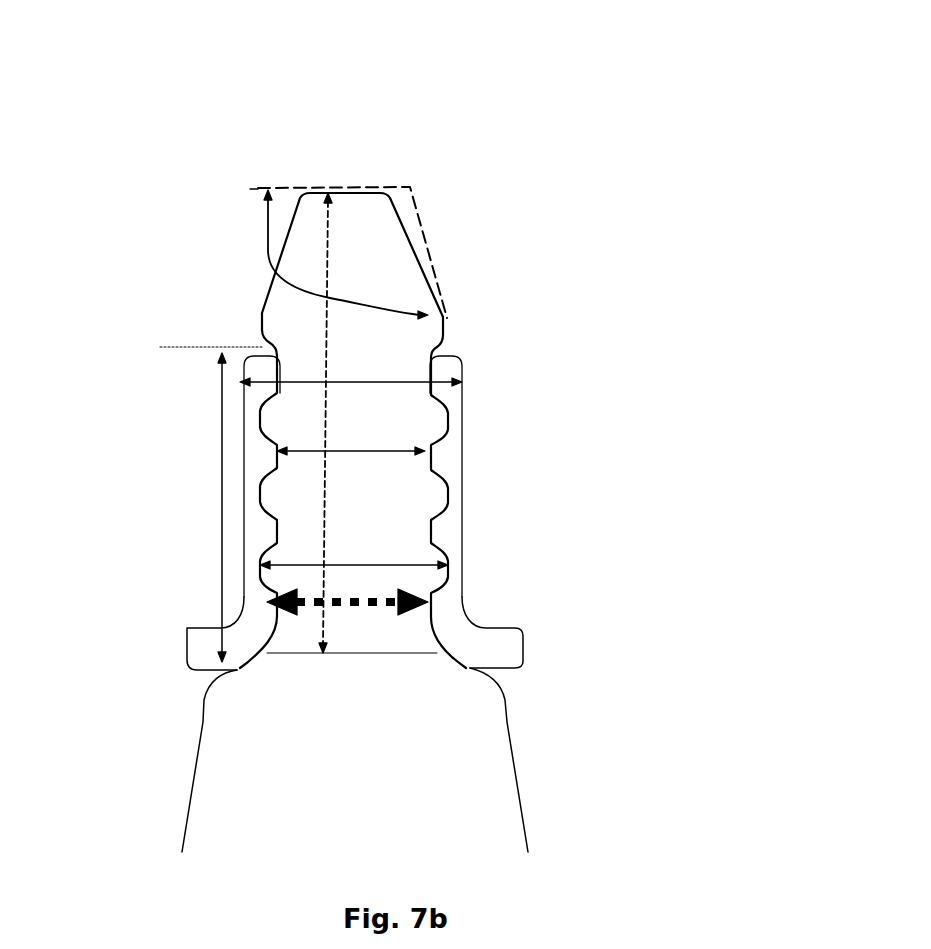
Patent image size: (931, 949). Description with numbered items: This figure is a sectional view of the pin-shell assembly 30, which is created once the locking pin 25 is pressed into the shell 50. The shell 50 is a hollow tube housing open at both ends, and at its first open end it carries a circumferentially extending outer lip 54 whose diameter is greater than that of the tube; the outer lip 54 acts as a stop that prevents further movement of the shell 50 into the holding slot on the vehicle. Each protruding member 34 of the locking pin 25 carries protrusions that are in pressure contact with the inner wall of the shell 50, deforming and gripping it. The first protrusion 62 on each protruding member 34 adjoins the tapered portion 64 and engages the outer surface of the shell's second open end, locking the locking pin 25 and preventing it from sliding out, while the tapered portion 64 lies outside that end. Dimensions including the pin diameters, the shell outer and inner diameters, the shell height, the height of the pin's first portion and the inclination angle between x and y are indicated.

The locking pin 25 is at (197, 742).
The pin-shell assembly 30 is at (268, 116).
The protruding member 34 is at (443, 470).
The shell 50 is at (457, 507).
The outer lip 54 is at (505, 638).
The first protrusion 62 is at (262, 322).
The tapered portion 64 is at (423, 258).